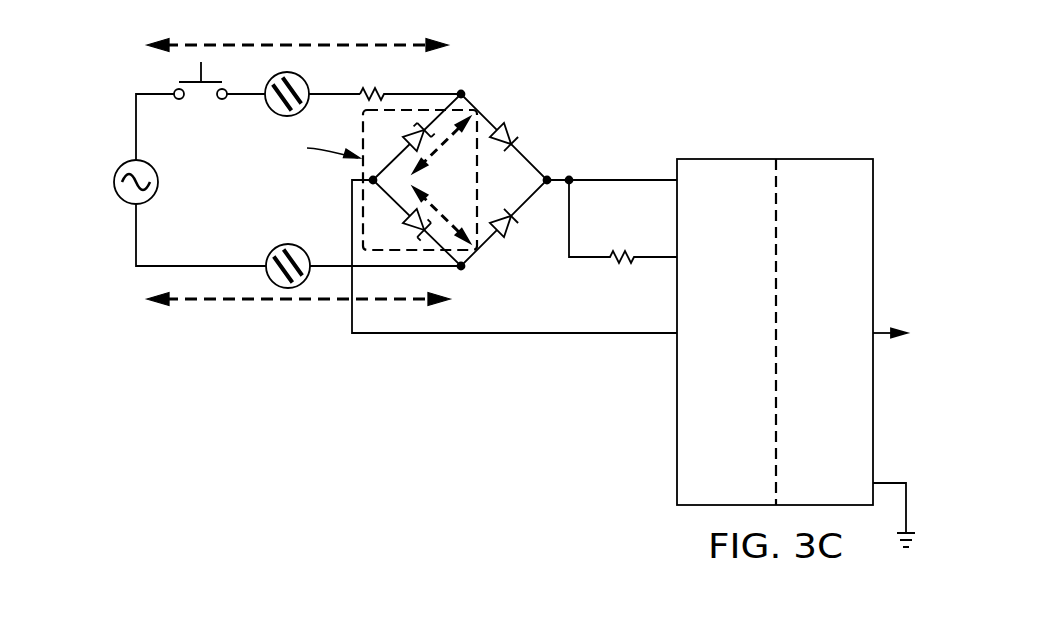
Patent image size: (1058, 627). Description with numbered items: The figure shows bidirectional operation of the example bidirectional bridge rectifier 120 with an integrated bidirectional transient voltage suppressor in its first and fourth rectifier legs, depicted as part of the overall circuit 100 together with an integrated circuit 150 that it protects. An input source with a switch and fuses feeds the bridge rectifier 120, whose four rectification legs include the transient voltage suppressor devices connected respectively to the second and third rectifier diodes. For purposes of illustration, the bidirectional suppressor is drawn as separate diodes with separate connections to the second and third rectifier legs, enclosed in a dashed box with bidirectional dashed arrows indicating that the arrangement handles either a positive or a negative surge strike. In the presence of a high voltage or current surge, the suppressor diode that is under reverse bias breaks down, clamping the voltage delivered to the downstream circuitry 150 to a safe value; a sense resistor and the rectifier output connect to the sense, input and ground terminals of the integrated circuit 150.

The surge protection circuit 100 is at (582, 56).
The bidirectional bridge rectifier 120 is at (512, 173).
The integrated circuit 150 is at (804, 153).